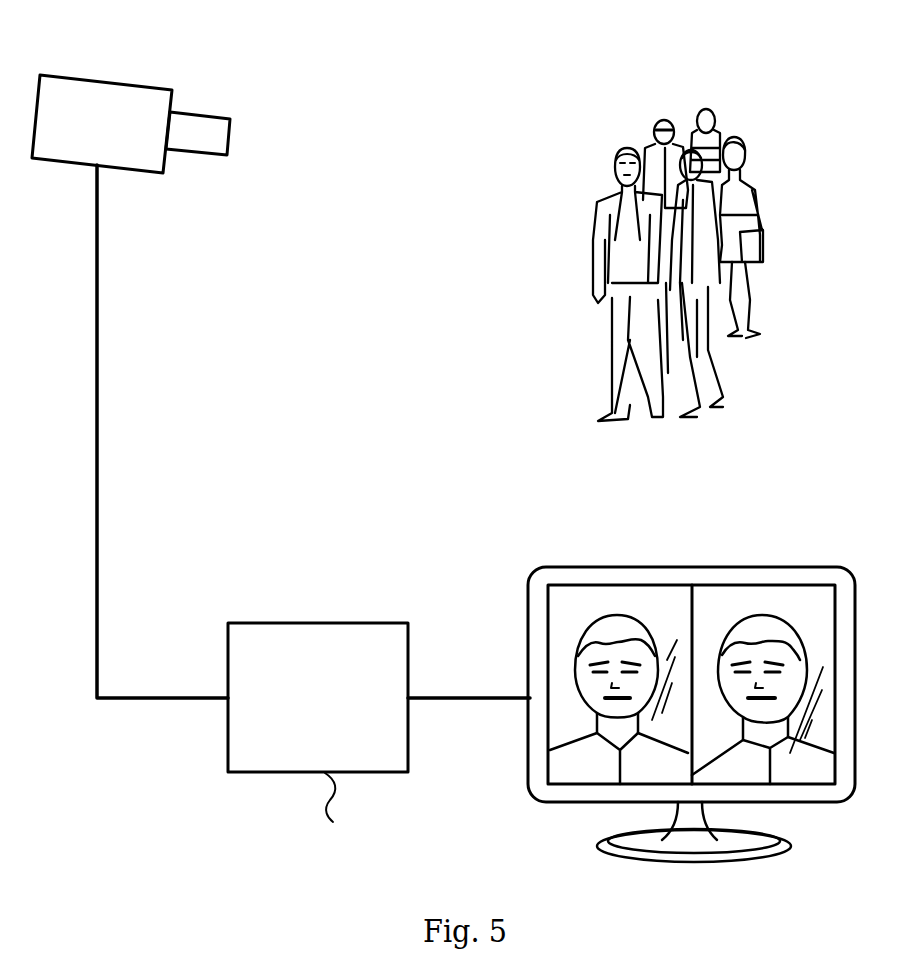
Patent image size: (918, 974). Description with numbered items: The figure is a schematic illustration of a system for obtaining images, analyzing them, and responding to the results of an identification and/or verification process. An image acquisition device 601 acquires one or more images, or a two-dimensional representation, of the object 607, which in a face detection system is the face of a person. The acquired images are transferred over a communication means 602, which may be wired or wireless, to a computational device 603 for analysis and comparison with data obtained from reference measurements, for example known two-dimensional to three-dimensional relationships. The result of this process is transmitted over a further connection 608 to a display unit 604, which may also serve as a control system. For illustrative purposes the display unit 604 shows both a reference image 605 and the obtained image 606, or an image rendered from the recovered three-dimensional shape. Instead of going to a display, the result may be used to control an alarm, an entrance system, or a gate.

The image acquisition device 601 is at (102, 102).
The communication means 602 is at (97, 362).
The computational device 603 is at (348, 715).
The display unit 604 is at (724, 537).
The reference image 605 is at (617, 630).
The obtained image 606 is at (763, 630).
The object 607 is at (598, 120).
The cable from computational device to display 608 is at (448, 698).